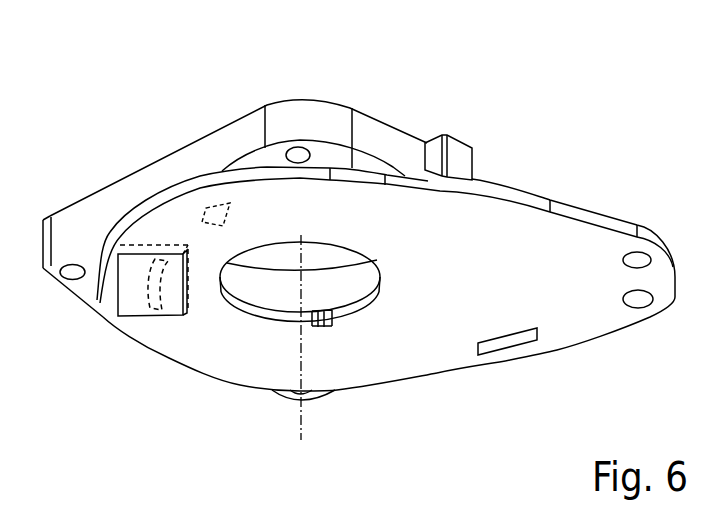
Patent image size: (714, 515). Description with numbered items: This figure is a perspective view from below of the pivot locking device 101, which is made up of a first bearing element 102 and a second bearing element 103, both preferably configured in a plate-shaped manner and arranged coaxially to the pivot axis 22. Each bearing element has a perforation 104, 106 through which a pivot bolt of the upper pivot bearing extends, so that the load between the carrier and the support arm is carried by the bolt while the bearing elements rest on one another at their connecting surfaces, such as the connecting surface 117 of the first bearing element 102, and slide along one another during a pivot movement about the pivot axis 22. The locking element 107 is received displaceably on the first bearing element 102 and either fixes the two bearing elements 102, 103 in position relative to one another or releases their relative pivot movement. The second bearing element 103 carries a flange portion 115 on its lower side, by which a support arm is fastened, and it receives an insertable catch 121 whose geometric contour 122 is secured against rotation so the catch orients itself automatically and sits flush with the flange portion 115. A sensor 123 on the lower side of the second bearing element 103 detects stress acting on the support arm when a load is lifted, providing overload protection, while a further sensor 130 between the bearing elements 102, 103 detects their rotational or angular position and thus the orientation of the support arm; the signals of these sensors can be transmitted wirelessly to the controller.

The pivot locking device 101 is at (580, 141).
The first bearing element 102 is at (368, 92).
The second bearing element 103 is at (550, 372).
The perforation 104 is at (275, 292).
The perforation 106 is at (284, 306).
The locking element 107 is at (458, 139).
The flange portion 115 is at (451, 357).
The connecting surface 117 is at (337, 163).
The catch 121 is at (106, 311).
The geometric contour 122 is at (118, 285).
The sensor 123 is at (500, 343).
The sensor 130 is at (205, 209).
The pivot axis 22 is at (301, 424).